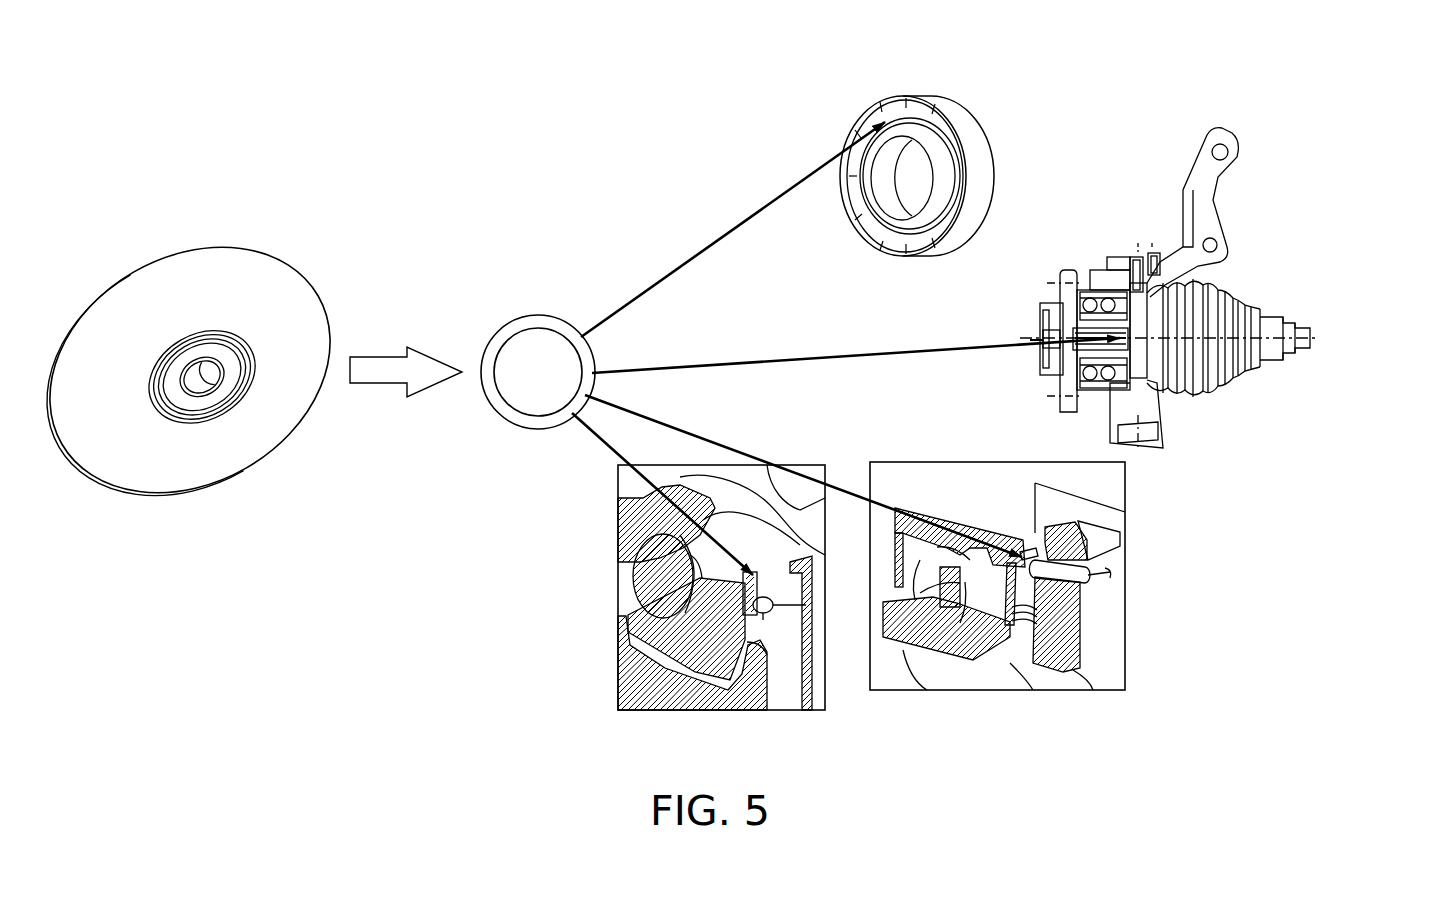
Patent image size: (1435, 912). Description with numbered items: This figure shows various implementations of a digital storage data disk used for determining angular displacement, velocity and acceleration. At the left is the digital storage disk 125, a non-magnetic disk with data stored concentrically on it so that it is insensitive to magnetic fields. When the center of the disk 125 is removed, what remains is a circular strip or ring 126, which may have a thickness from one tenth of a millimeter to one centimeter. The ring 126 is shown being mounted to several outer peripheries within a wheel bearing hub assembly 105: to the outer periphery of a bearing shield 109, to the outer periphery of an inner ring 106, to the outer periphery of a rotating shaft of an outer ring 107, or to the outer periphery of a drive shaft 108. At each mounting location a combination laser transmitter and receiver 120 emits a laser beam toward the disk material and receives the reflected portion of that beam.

The wheel bearing hub assembly 105 is at (1221, 273).
The inner ring 106 is at (617, 582).
The outer ring 107 is at (1125, 575).
The drive shaft 108 is at (1240, 297).
The bearing shield 109 is at (967, 123).
The combination laser transmitter and receiver 120 is at (1128, 257).
The digital storage disk 125 is at (277, 315).
The circular strip or ring 126 is at (567, 326).